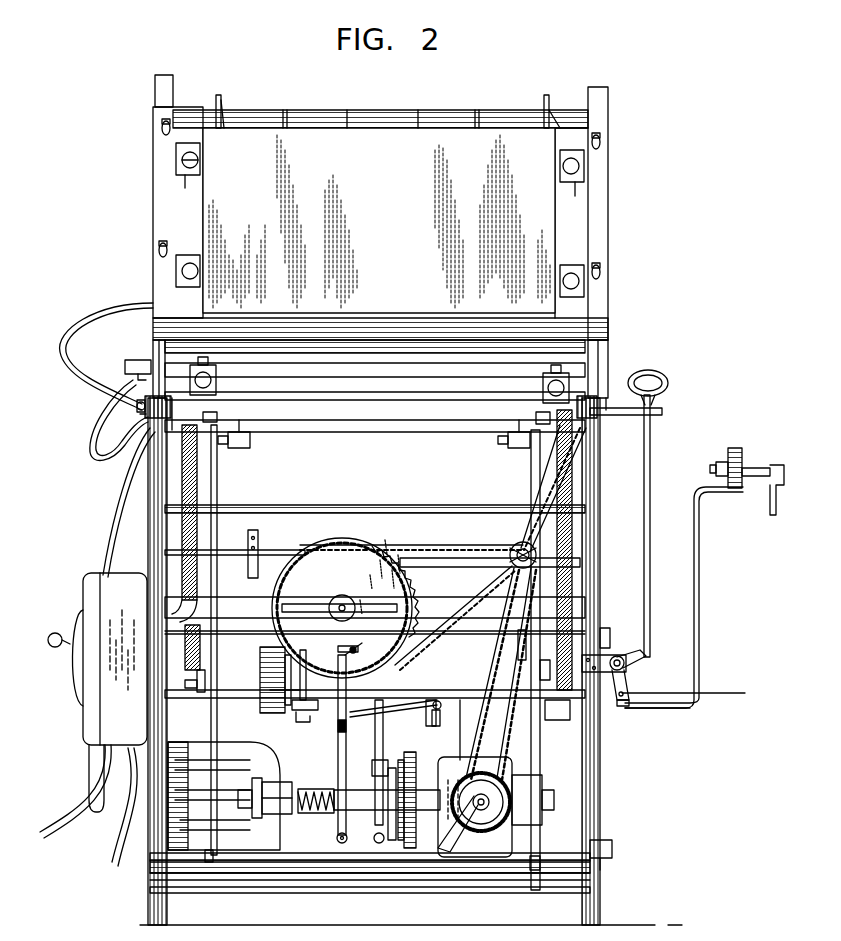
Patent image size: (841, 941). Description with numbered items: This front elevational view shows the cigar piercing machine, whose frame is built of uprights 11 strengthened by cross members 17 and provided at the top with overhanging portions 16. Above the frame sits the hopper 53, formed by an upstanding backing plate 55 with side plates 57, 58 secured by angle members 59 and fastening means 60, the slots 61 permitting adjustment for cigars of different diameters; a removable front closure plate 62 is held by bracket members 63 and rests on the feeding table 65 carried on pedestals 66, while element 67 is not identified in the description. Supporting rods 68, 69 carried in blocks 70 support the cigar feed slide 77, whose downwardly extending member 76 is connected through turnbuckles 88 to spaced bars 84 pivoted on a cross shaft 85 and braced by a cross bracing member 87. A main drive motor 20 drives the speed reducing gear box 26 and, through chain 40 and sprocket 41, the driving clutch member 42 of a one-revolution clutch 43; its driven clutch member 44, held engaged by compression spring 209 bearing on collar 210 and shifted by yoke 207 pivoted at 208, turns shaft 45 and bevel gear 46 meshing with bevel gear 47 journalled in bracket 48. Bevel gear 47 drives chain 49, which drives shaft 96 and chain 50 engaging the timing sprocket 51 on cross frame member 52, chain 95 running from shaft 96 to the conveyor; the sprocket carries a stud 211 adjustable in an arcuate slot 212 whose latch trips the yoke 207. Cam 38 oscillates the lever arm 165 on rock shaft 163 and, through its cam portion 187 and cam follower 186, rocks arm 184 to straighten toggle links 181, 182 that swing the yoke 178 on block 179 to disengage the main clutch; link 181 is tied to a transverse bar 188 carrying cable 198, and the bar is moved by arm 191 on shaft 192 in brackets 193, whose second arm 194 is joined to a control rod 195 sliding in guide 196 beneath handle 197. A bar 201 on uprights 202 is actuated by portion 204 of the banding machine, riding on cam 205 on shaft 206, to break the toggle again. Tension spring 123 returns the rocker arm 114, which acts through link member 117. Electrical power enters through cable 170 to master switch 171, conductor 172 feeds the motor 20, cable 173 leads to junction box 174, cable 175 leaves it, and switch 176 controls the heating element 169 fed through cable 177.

The uprights 11 is at (150, 886).
The overhanging portions 16 is at (172, 407).
The cross member 17 is at (580, 889).
The main drive motor 20 is at (228, 860).
The speed reducing gear box 26 is at (505, 835).
The cam 38 is at (262, 715).
The chain 40 is at (410, 755).
The sprocket 41 is at (416, 768).
The driving clutch member 42 is at (394, 818).
The clutch 43 is at (370, 820).
The driven clutch member 44 is at (361, 790).
The shaft 45 is at (246, 790).
The bevel gear 46 is at (475, 807).
The bevel gear 47 is at (488, 826).
The bracket 48 is at (455, 838).
The chain 49 is at (515, 752).
The chain 50 is at (440, 548).
The timing sprocket 51 is at (402, 592).
The cross frame member 52 is at (446, 610).
The hopper 53 is at (608, 122).
The backing plate 55 is at (378, 112).
The side plate 57 is at (216, 112).
The side plate 58 is at (552, 112).
The angle members 59 is at (178, 168).
The screw threaded fastening means 60 is at (171, 125).
The slots 61 is at (383, 194).
The front closure plate 62 is at (525, 240).
The bracket members 63 is at (222, 100).
The feeding table 65 is at (402, 318).
The pedestals 66 is at (153, 345).
The bracket 67 is at (288, 112).
The supporting rod 68 is at (206, 378).
The supporting rod 69 is at (552, 386).
The blocks 70 is at (216, 400).
The downwardly extending member 76 is at (160, 430).
The cigar feed slide 77 is at (392, 358).
The spaced bars 84 is at (210, 862).
The cross shaft 85 is at (300, 872).
The cross bracing member 87 is at (383, 506).
The turnbuckles 88 is at (244, 445).
The chain 95 is at (575, 490).
The shaft 96 is at (519, 545).
The rocker arm 114 is at (192, 690).
The link member 117 is at (182, 515).
The tension spring 123 is at (198, 481).
The rock shaft 163 is at (228, 551).
The lever arm 165 is at (258, 540).
The heating element 169 is at (125, 365).
The cable 170 is at (60, 828).
The master switch 171 is at (92, 586).
The conductor 172 is at (115, 856).
The cable 173 is at (118, 494).
The junction box and control switch 174 is at (140, 414).
The cable 175 is at (92, 320).
The switch 176 is at (137, 406).
The cable 177 is at (97, 450).
The yoke 178 is at (386, 752).
The block 179 is at (380, 872).
The link 181 is at (401, 710).
The link 182 is at (346, 724).
The arm 184 is at (293, 700).
The cam follower 186 is at (303, 650).
The cam portion 187 is at (290, 698).
The bar 188 is at (560, 704).
The arm 191 is at (624, 706).
The shaft 192 is at (625, 665).
The brackets 193 is at (606, 655).
The second arm 194 is at (648, 652).
The control rod 195 is at (650, 493).
The guide 196 is at (662, 412).
The handle 197 is at (666, 382).
The cable 198 is at (727, 697).
The bar 201 is at (670, 709).
The uprights 202 is at (462, 728).
The portion 204 is at (723, 495).
The cam 205 is at (728, 455).
The shaft 206 is at (756, 466).
The yoke 207 is at (338, 731).
The pivot 208 is at (337, 840).
The compression spring 209 is at (318, 814).
The collar 210 is at (300, 790).
The stud 211 is at (348, 655).
The arcuate slot 212 is at (360, 648).